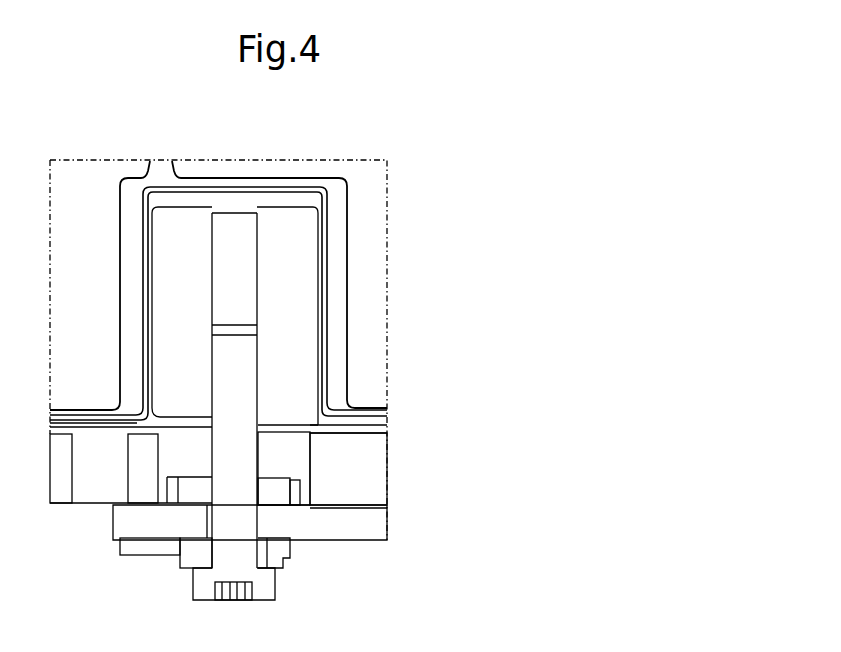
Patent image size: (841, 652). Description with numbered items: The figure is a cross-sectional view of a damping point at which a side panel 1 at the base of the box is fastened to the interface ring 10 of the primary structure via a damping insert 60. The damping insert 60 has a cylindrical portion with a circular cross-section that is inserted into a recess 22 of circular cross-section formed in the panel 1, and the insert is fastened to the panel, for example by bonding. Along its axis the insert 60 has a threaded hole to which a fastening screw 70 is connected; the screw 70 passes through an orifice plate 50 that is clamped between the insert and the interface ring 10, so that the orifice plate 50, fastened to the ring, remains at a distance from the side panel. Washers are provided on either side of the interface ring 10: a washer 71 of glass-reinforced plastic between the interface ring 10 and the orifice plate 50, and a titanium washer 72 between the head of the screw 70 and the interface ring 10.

The panel 1 is at (372, 222).
The damping insert 60 is at (303, 298).
The recess 22 is at (330, 343).
The fastening screw 70 is at (242, 447).
The washer 71 is at (268, 495).
The orifice plate 50 is at (375, 478).
The interface ring 10 is at (387, 525).
The washer 72 is at (277, 548).